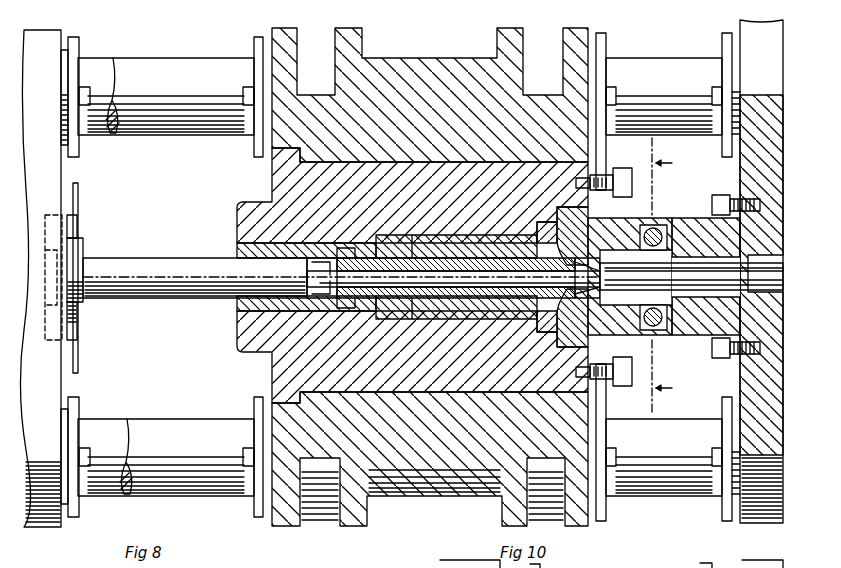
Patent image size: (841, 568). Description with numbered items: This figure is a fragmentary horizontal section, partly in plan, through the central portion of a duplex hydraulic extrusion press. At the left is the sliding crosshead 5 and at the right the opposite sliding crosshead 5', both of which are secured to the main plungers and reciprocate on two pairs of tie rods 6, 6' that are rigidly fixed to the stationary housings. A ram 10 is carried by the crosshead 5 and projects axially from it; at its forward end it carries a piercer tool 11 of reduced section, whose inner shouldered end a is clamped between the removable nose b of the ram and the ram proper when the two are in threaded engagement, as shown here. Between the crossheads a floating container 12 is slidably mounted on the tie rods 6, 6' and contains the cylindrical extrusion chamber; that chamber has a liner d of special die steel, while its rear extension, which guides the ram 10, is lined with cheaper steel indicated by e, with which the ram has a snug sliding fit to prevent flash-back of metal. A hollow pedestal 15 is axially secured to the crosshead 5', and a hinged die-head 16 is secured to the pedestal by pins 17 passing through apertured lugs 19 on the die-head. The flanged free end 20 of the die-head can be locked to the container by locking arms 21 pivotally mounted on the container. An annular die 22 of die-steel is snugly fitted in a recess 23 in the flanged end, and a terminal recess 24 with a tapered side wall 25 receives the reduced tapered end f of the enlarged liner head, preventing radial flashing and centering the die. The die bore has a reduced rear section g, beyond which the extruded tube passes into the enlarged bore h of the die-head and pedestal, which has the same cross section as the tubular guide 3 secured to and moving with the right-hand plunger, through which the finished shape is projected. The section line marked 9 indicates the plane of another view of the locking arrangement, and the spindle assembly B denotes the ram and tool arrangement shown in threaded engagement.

The tubular guide 3 is at (783, 258).
The sliding crosshead 5 is at (71, 278).
The sliding crosshead 5' is at (762, 271).
The tie rod 6 is at (162, 95).
The tie rod 6' is at (162, 456).
The section line 9- 9 is at (662, 275).
The ram 10 is at (162, 258).
The piercer tool 11 is at (447, 282).
The floating container 12 is at (418, 105).
The hollow pedestal 15 is at (698, 232).
The die-head 16 is at (615, 232).
The pin 17 is at (652, 246).
The apertured lug 19 is at (662, 236).
The free end of die-head 20 is at (558, 328).
The locking arm 21 is at (603, 170).
The annular die 22 is at (556, 326).
The recess 23 is at (580, 248).
The terminal recess 24 is at (553, 227).
The tapered side wall 25 is at (557, 217).
The inner shouldered end a is at (352, 270).
The removable nose b is at (371, 293).
The spindle B is at (455, 262).
The liner d is at (481, 290).
The liner e is at (266, 250).
The reduced tapered end f is at (540, 343).
The rear section of die bore g is at (598, 280).
The enlarged bore h is at (728, 283).